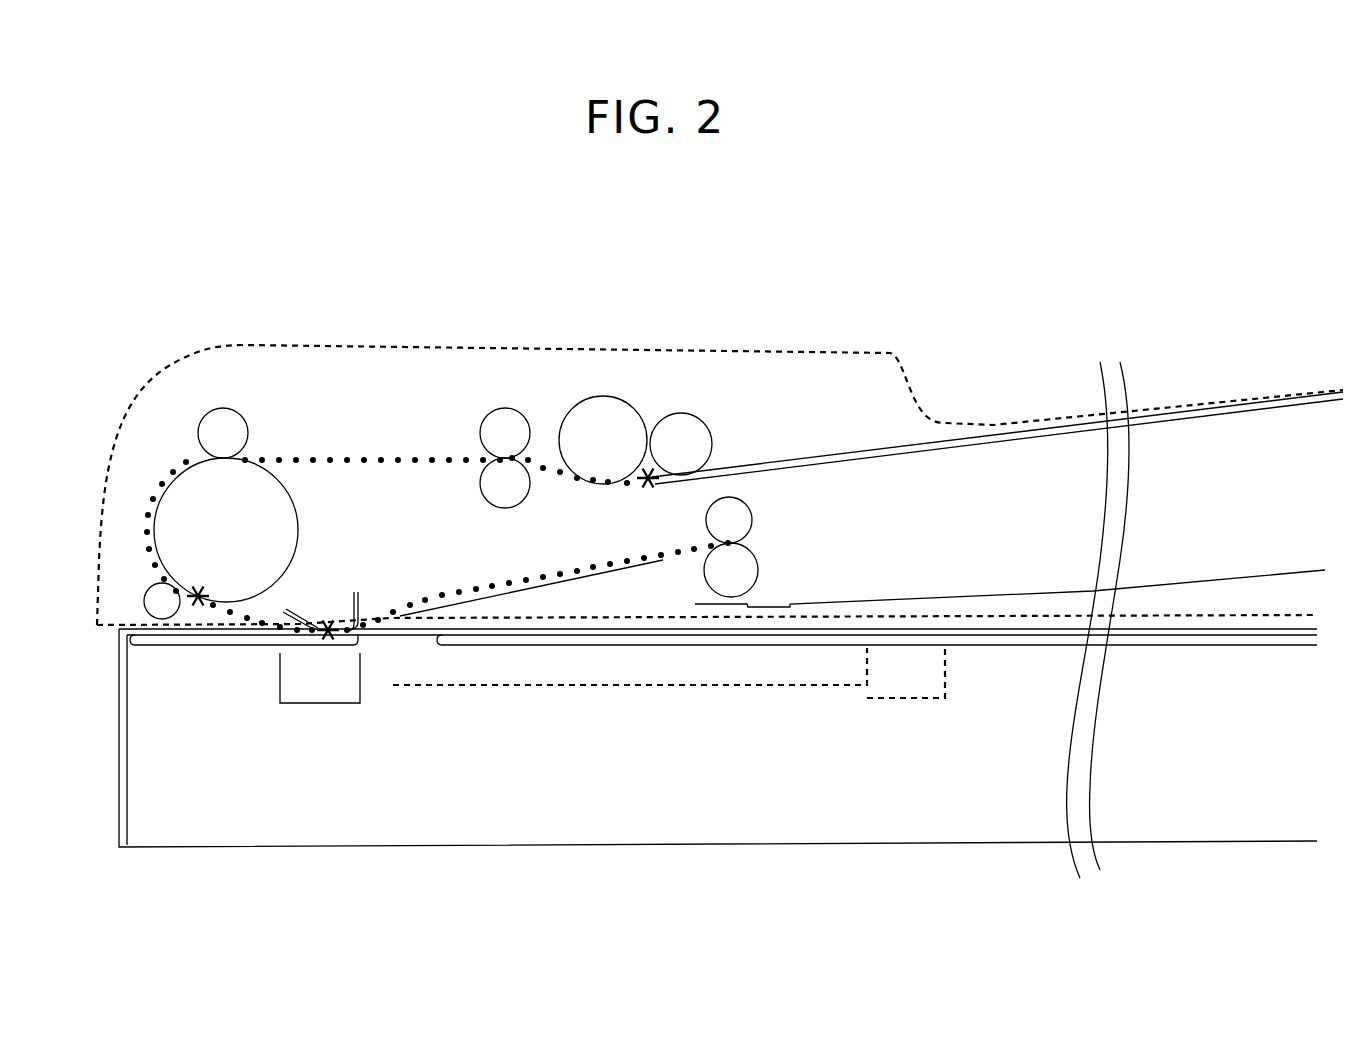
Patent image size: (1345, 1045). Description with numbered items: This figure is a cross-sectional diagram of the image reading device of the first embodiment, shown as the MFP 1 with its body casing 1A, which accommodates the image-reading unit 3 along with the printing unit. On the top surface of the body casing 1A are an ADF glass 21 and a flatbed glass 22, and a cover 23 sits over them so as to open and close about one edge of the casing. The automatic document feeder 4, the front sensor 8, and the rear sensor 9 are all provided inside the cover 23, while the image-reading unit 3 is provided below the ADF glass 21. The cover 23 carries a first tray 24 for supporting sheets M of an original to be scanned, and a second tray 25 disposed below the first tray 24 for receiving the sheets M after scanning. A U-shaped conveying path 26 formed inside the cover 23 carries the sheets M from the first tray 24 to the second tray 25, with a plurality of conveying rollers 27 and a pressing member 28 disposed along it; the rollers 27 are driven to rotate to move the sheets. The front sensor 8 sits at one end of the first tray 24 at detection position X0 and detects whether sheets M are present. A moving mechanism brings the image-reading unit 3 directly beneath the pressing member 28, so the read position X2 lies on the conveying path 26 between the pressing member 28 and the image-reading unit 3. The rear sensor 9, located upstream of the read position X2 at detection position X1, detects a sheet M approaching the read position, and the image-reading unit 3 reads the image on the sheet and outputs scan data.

The MFP 1 is at (756, 179).
The body casing 1A is at (118, 718).
The image-reading unit 3 is at (280, 670).
The automatic document feeder 4 is at (158, 447).
The front sensor 8 is at (638, 456).
The rear sensor 9 is at (199, 592).
The ADF glass 21 is at (175, 643).
The flatbed glass 22 is at (533, 642).
The cover 23 is at (410, 352).
The first tray 24 is at (1225, 413).
The second tray 25 is at (1213, 583).
The conveying path 26 is at (559, 570).
The conveying rollers 27 is at (210, 437).
The pressing member 28 is at (348, 593).
The sheet M is at (882, 447).
The detection position X0 is at (647, 487).
The detection position X1 is at (196, 603).
The read position X2 is at (326, 622).